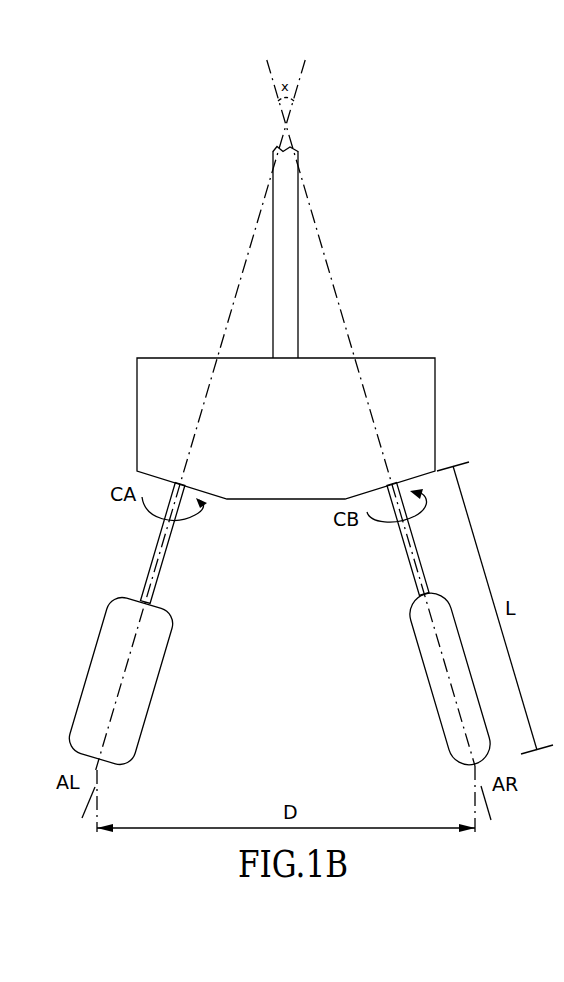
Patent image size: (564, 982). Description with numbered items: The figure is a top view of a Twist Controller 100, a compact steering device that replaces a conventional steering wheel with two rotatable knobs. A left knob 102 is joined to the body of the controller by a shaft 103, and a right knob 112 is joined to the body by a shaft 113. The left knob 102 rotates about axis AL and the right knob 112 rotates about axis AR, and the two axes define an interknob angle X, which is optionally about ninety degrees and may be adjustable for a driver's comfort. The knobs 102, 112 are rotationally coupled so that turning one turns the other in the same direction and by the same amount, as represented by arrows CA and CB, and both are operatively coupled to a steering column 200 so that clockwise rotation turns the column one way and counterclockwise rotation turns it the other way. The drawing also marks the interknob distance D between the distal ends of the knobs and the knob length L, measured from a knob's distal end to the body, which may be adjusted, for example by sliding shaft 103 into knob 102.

The Twist Controller 100 is at (145, 208).
The steering column 200 is at (297, 287).
The shaft 103 is at (155, 548).
The left knob 102 is at (95, 637).
The shaft 113 is at (408, 572).
The right knob 112 is at (415, 636).